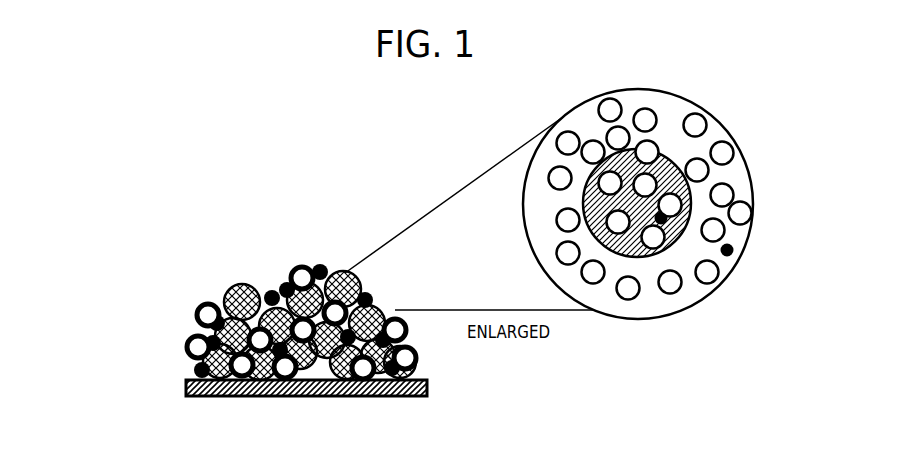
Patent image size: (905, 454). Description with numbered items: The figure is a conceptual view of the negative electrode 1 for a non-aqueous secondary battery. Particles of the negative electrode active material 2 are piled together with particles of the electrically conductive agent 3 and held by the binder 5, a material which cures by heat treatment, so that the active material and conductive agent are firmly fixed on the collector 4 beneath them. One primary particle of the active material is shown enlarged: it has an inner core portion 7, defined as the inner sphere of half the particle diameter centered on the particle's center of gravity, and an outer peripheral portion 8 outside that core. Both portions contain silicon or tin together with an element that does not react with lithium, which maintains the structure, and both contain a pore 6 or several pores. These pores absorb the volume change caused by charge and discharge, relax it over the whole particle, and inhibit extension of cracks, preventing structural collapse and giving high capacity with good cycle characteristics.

The negative electrode 1 is at (167, 400).
The negative electrode active material 2 is at (226, 284).
The electrically conductive agent 3 is at (268, 290).
The collector 4 is at (428, 388).
The binder 5 is at (300, 268).
The pore 6 is at (698, 126).
The inner core portion 7 is at (667, 230).
The outer peripheral portion 8 is at (730, 256).